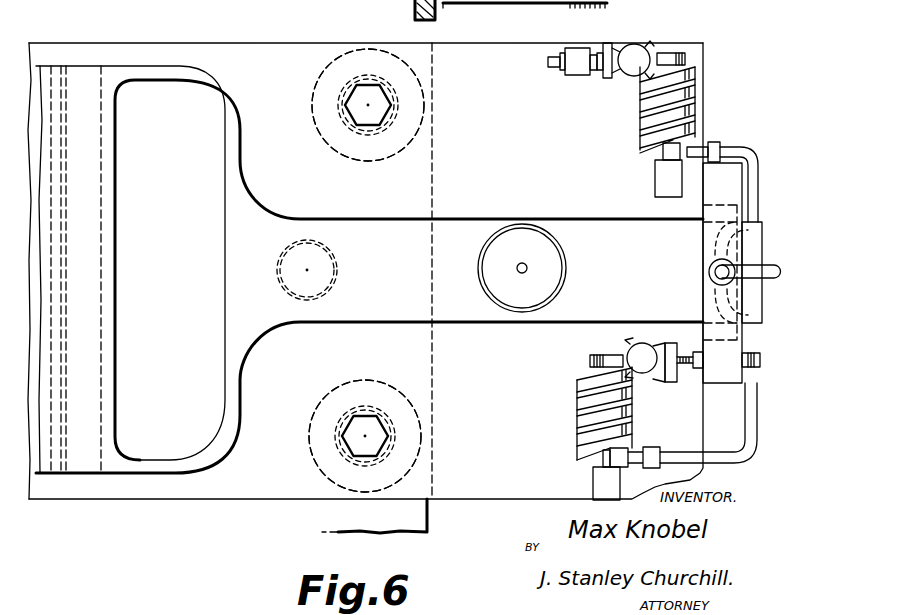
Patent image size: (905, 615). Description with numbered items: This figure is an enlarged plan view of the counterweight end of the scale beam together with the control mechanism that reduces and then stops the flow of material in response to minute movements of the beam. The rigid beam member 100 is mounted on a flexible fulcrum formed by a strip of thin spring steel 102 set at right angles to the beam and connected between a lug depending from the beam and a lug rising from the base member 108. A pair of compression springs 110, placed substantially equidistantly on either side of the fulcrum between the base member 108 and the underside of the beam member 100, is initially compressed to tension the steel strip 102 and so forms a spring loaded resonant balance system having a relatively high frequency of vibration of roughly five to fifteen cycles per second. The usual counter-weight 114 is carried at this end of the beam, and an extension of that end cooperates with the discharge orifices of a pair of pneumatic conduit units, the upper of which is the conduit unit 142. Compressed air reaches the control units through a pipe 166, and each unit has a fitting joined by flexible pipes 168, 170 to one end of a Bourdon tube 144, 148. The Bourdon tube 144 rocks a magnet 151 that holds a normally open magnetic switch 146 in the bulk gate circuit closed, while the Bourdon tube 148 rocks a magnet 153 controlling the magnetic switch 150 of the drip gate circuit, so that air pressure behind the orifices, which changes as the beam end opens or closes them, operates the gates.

The beam member 100 is at (460, 227).
The strip of thin spring steel 102 is at (62, 262).
The base member 108 is at (232, 492).
The compression springs 110 is at (337, 266).
The counter-weight 114 is at (530, 243).
The upper pneumatically operated conduit unit 142 is at (713, 262).
The Bourdon tube 144 is at (648, 125).
The magnetic switch 146 is at (633, 53).
The Bourdon tube 148 is at (578, 410).
The magnetic switch 150 is at (648, 350).
The magnet 151 is at (685, 58).
The magnet 153 is at (590, 360).
The pipe 166 is at (767, 268).
The flexible pipe 168 is at (748, 147).
The flexible pipe 170 is at (745, 442).